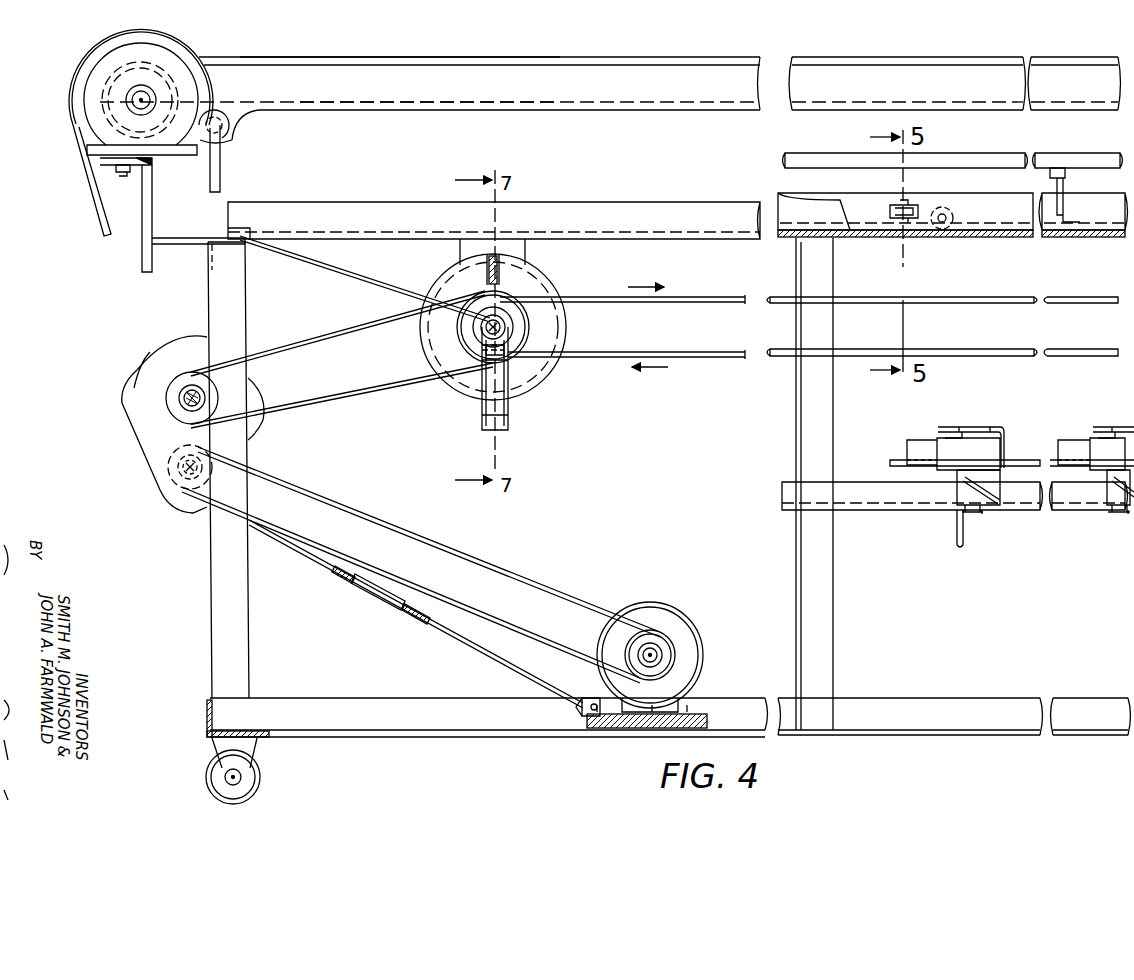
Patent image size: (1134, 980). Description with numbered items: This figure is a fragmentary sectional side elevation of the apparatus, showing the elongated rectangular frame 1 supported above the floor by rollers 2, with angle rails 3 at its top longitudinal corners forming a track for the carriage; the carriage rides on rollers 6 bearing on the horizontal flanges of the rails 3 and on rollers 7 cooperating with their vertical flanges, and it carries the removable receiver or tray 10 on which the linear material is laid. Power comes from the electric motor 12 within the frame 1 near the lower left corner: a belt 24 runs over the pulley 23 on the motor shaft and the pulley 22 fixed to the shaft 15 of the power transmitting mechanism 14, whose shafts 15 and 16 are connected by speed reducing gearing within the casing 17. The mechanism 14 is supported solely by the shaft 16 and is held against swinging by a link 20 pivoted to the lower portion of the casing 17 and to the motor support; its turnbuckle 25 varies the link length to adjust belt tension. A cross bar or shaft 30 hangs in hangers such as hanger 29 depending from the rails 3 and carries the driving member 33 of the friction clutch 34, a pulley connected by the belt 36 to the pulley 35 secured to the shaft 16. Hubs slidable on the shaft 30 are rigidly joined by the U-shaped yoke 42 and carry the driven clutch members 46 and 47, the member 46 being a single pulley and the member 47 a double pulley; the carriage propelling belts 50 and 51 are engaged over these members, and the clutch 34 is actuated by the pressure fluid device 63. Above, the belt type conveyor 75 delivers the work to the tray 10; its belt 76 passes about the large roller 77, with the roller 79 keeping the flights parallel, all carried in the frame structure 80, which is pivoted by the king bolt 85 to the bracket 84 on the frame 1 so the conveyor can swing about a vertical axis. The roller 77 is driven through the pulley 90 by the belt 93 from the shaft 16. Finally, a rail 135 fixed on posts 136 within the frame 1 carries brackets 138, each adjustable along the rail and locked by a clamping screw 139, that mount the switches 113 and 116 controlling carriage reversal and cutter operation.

The frame 1 is at (205, 622).
The rollers 2 is at (262, 777).
The angle rails 3 is at (340, 202).
The rollers 6 is at (953, 212).
The rollers 7 is at (912, 206).
The receiver or tray 10 is at (1090, 154).
The electric motor 12 is at (660, 608).
The power transmitting mechanism 14 is at (123, 419).
The shaft 15 is at (176, 482).
The shaft 16 is at (187, 396).
The casing 17 is at (133, 386).
The link 20 is at (297, 563).
The pulley 22 is at (173, 461).
The pulley 23 is at (660, 645).
The belt 24 is at (438, 544).
The turnbuckle 25 is at (379, 610).
The hanger 29 is at (520, 252).
The cross bar or shaft 30 is at (478, 336).
The driving member 33 is at (478, 300).
The clutch 34 is at (510, 370).
The pulley 35 is at (185, 382).
The belt 36 is at (342, 399).
The U-shaped frame or yoke 42 is at (480, 425).
The driven clutch member 46 is at (515, 320).
The driven clutch member 47 is at (430, 338).
The carriage propelling belt 50 is at (692, 297).
The carriage propelling belt 51 is at (746, 296).
The pressure fluid device 63 is at (515, 340).
The belt type conveyor 75 is at (517, 56).
The conveyor belt 76 is at (378, 57).
The roller 77 is at (108, 92).
The roller 79 is at (230, 142).
The frame structure 80 is at (414, 100).
The bracket 84 is at (150, 211).
The king bolt 85 is at (126, 176).
The pulley 90 is at (180, 48).
The belt 93 is at (92, 182).
The switch 113 is at (993, 440).
The switch 116 is at (1092, 440).
The rail 135 is at (855, 500).
The posts 136 is at (956, 546).
The bracket 138 is at (972, 514).
The clamping screw 139 is at (1125, 505).